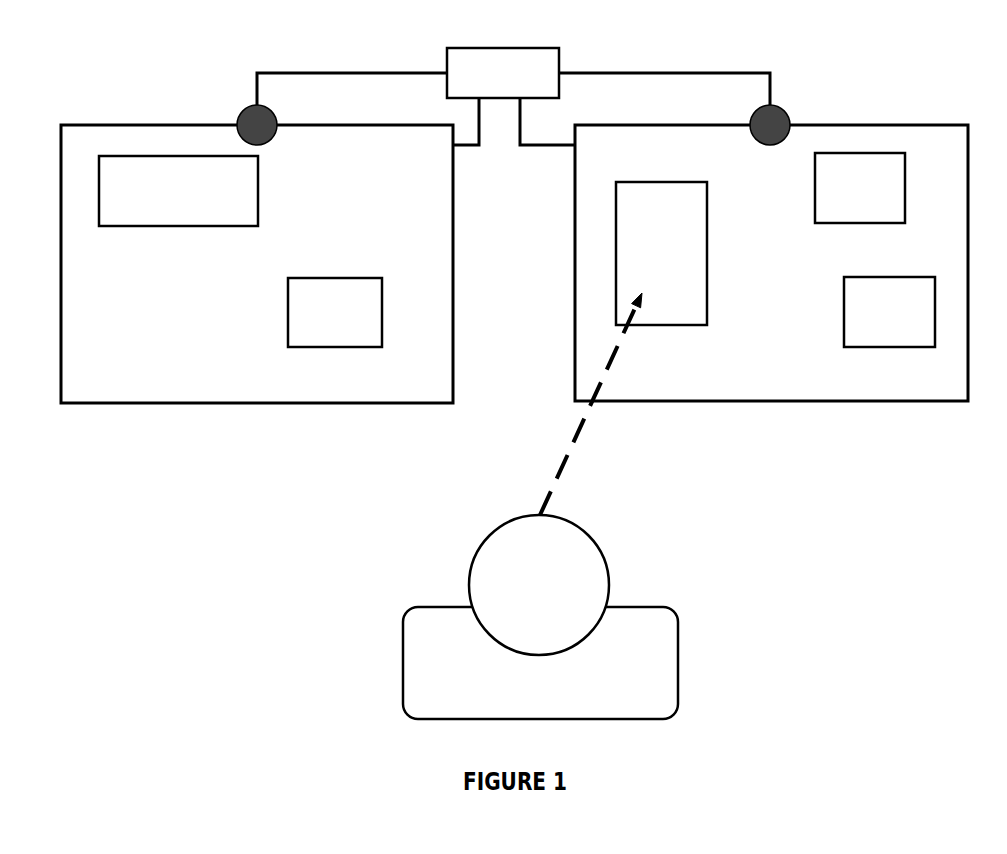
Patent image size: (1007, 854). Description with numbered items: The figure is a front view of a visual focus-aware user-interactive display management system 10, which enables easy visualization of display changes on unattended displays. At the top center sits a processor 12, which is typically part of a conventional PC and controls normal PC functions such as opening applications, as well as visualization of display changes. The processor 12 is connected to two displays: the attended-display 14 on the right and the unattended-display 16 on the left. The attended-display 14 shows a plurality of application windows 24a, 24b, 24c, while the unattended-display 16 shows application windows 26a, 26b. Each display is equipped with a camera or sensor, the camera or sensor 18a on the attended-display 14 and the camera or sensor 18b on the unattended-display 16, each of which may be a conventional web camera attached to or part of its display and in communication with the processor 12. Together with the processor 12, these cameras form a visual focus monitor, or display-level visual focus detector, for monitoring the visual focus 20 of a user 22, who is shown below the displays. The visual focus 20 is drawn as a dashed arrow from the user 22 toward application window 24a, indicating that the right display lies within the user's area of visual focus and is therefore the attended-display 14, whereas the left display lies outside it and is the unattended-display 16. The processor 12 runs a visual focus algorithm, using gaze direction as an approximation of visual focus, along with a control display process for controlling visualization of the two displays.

The user-interactive display management system 10 is at (788, 607).
The processor 12 is at (513, 96).
The attended-display 14 is at (792, 367).
The unattended-display 16 is at (220, 379).
The camera or sensor 18a is at (787, 110).
The camera or sensor 18b is at (243, 112).
The visual focus 20 is at (568, 462).
The user 22 is at (442, 643).
The application window 24a is at (661, 253).
The application window 24b is at (860, 188).
The application window 24c is at (889, 312).
The application window 26a is at (178, 191).
The application window 26b is at (335, 312).